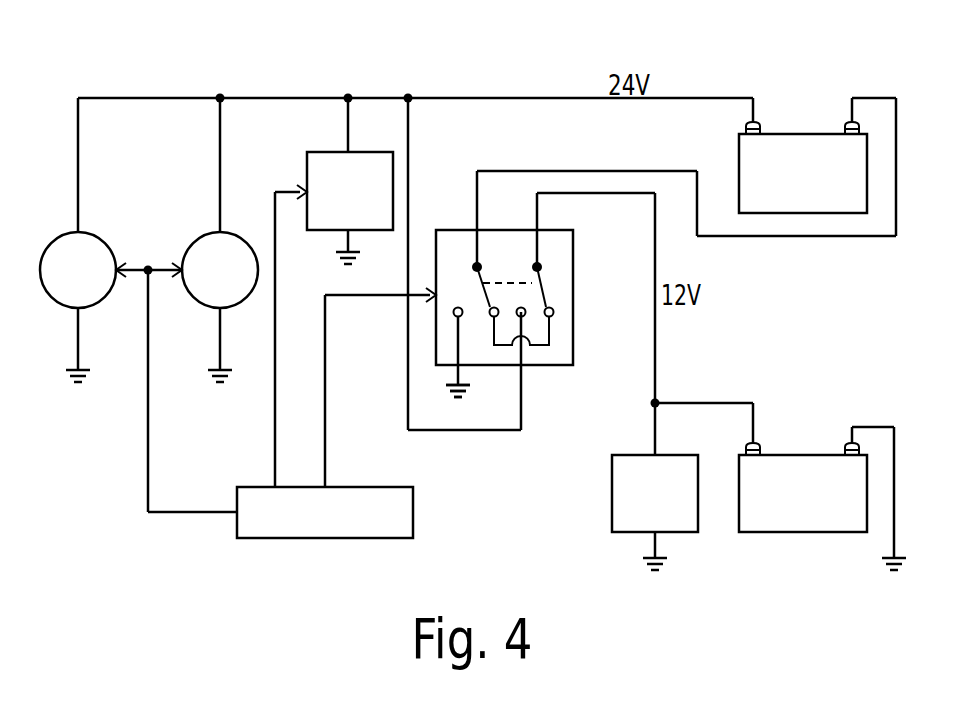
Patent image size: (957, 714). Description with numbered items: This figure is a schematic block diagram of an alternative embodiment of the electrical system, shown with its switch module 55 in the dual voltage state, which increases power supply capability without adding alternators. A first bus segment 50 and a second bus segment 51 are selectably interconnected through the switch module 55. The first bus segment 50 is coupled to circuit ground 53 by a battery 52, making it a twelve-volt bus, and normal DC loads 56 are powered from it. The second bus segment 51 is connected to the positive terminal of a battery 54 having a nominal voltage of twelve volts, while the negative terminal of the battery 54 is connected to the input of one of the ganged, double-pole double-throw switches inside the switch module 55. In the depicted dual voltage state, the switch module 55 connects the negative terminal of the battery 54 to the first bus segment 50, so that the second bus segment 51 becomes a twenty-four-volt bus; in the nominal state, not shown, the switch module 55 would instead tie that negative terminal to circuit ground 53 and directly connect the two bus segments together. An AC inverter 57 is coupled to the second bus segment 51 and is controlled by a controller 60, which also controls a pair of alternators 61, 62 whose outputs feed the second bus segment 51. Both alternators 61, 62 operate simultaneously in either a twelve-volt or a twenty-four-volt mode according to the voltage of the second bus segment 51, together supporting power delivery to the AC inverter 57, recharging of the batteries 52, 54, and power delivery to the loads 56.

The first bus segment 50 is at (728, 403).
The second bus segment 51 is at (504, 97).
The battery 52 is at (838, 533).
The circuit ground 53 is at (469, 387).
The battery 54 is at (786, 134).
The switch module 55 is at (555, 365).
The DC loads 56 is at (612, 513).
The AC inverter 57 is at (372, 152).
The controller 60 is at (413, 522).
The alternator 61 is at (190, 236).
The alternator 62 is at (98, 235).